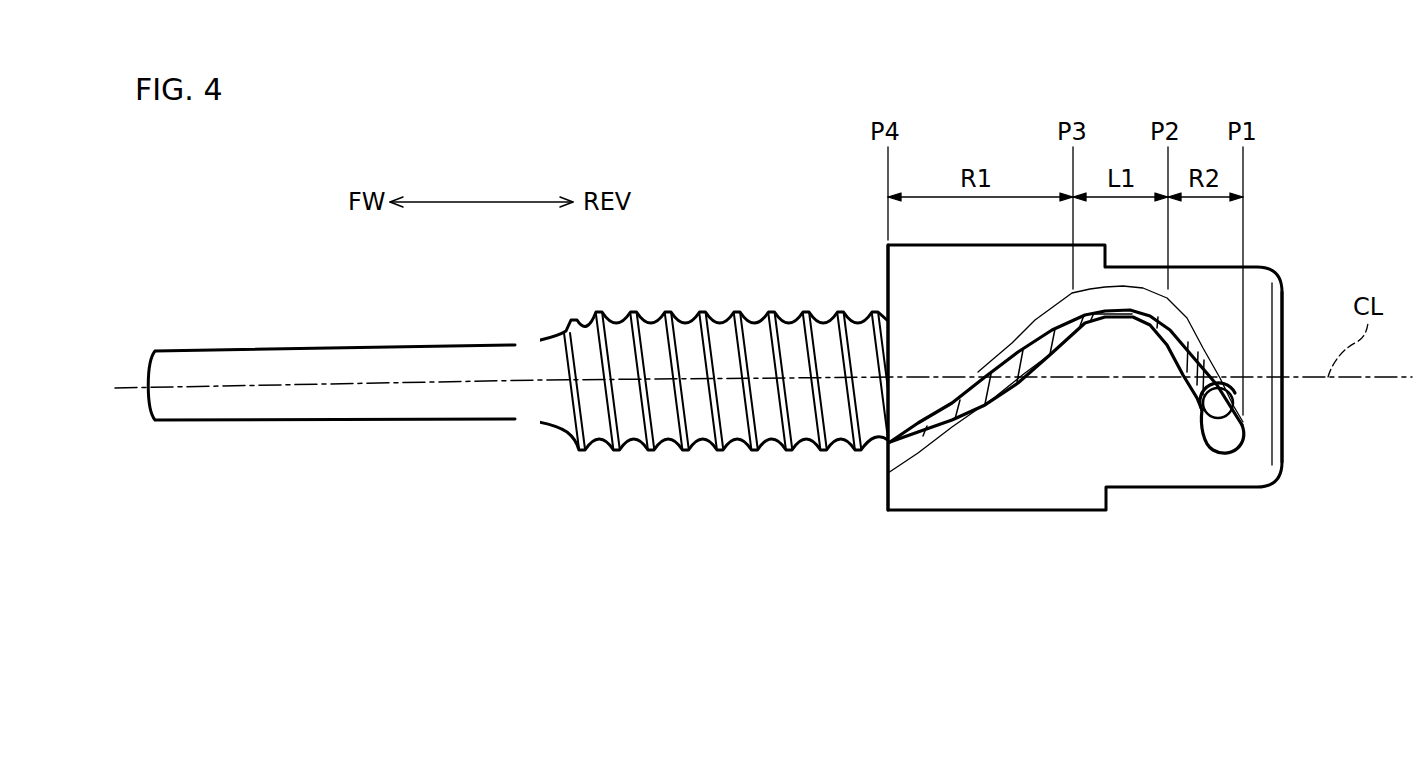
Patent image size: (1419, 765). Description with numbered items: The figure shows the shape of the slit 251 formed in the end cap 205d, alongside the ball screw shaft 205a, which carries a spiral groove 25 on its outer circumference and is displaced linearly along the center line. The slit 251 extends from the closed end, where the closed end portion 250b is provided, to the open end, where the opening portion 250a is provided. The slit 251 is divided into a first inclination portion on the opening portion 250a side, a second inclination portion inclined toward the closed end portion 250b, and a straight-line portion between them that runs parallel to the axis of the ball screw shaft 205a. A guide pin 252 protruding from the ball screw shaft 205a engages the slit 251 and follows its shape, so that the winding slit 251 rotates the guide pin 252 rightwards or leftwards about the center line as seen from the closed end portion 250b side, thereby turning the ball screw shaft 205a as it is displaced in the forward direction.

The ball screw shaft 205a is at (372, 407).
The spiral groove 25 is at (703, 442).
The opening portion 250a is at (888, 488).
The closed end portion 250b is at (1282, 443).
The slit 251 is at (940, 443).
The end cap 205d is at (1080, 445).
The guide pin 252 is at (1218, 405).